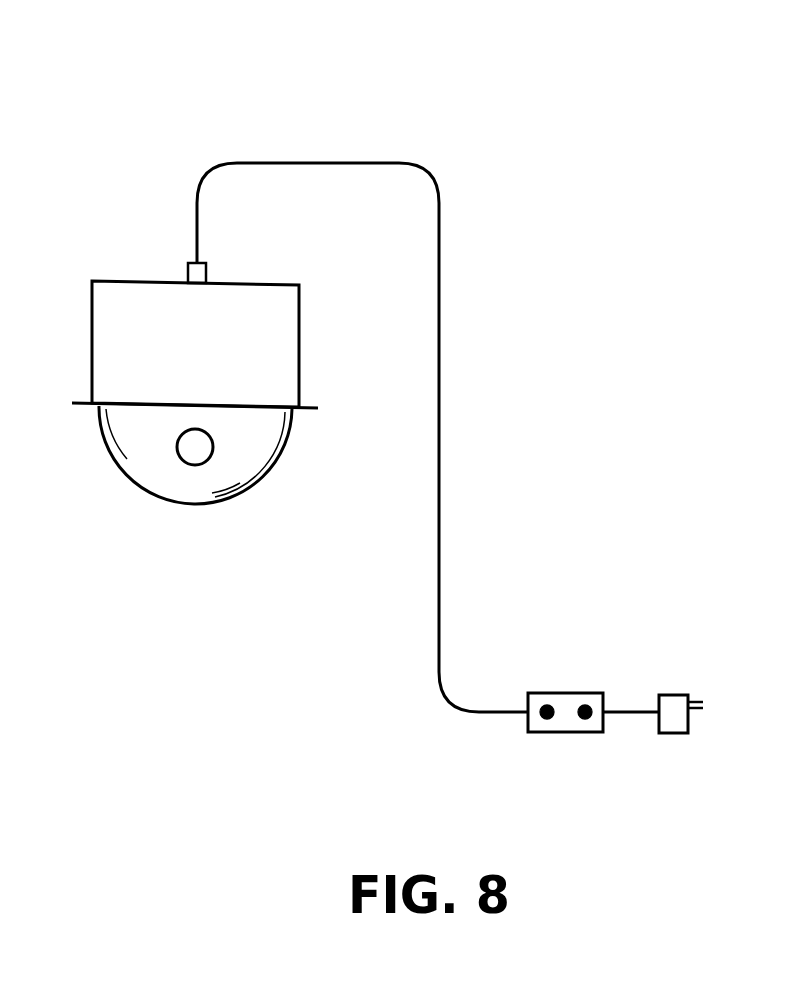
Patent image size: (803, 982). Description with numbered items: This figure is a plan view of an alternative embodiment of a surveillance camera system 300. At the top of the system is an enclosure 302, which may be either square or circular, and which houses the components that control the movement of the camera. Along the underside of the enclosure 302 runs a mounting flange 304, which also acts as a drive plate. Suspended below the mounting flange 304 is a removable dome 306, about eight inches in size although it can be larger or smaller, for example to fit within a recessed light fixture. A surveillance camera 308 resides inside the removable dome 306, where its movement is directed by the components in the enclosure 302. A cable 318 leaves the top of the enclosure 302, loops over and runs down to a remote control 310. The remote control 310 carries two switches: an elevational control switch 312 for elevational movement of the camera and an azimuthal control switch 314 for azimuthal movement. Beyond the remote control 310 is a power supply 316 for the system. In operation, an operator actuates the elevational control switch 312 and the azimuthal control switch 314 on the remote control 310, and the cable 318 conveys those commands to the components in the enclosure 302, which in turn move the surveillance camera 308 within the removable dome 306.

The surveillance camera system 300 is at (576, 98).
The enclosure 302 is at (299, 343).
The mounting flange 304 is at (308, 408).
The removable dome 306 is at (245, 487).
The surveillance camera 308 is at (184, 462).
The remote control 310 is at (545, 693).
The elevational control switch 312 is at (545, 719).
The azimuthal control switch 314 is at (587, 719).
The power supply 316 is at (677, 695).
The cable 318 is at (437, 483).